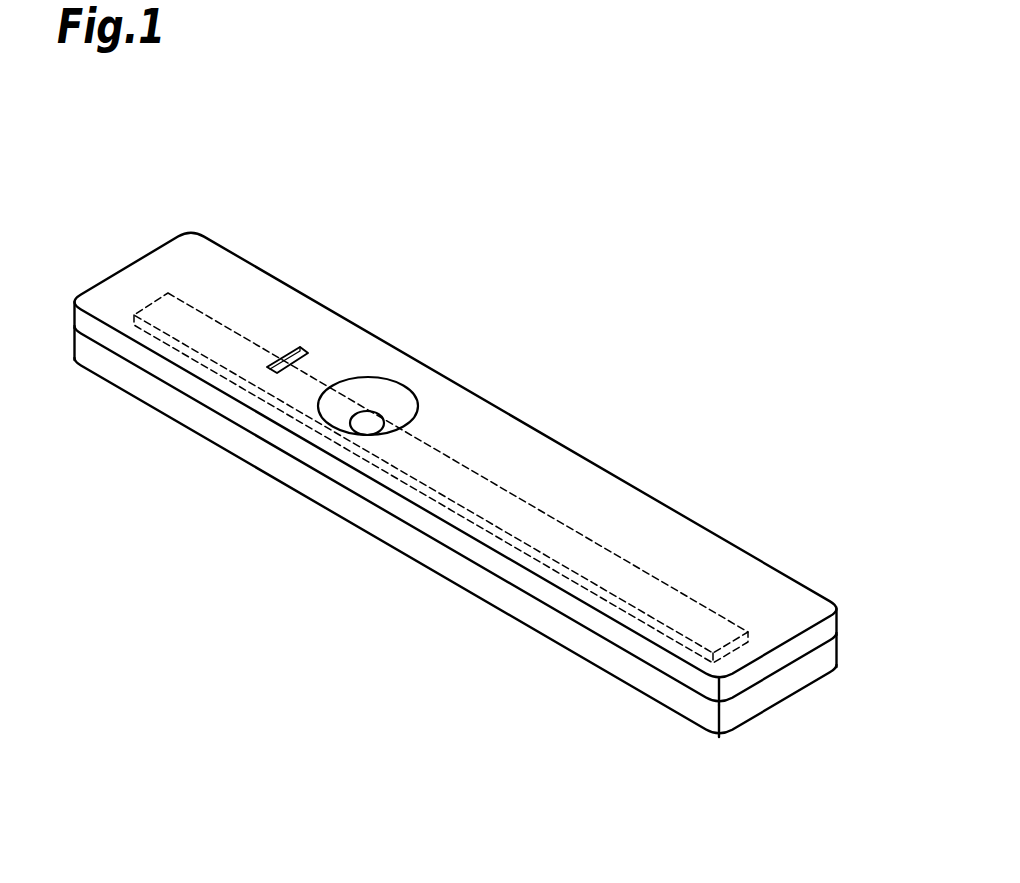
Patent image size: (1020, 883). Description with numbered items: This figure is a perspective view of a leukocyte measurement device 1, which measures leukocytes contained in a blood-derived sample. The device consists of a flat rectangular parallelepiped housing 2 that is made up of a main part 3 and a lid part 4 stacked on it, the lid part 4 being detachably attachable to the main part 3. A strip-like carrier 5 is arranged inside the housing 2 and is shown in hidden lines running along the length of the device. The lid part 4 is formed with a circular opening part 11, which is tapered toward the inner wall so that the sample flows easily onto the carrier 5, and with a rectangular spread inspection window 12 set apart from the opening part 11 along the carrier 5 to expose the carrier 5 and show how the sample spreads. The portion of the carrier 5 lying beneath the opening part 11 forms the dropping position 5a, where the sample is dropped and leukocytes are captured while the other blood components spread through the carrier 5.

The leukocyte measurement device 1 is at (157, 228).
The housing 2 is at (696, 505).
The main part 3 is at (763, 693).
The lid part 4 is at (760, 583).
The carrier 5 is at (573, 543).
The dropping position 5a is at (370, 415).
The opening part 11 is at (395, 421).
The spread inspection window 12 is at (308, 350).